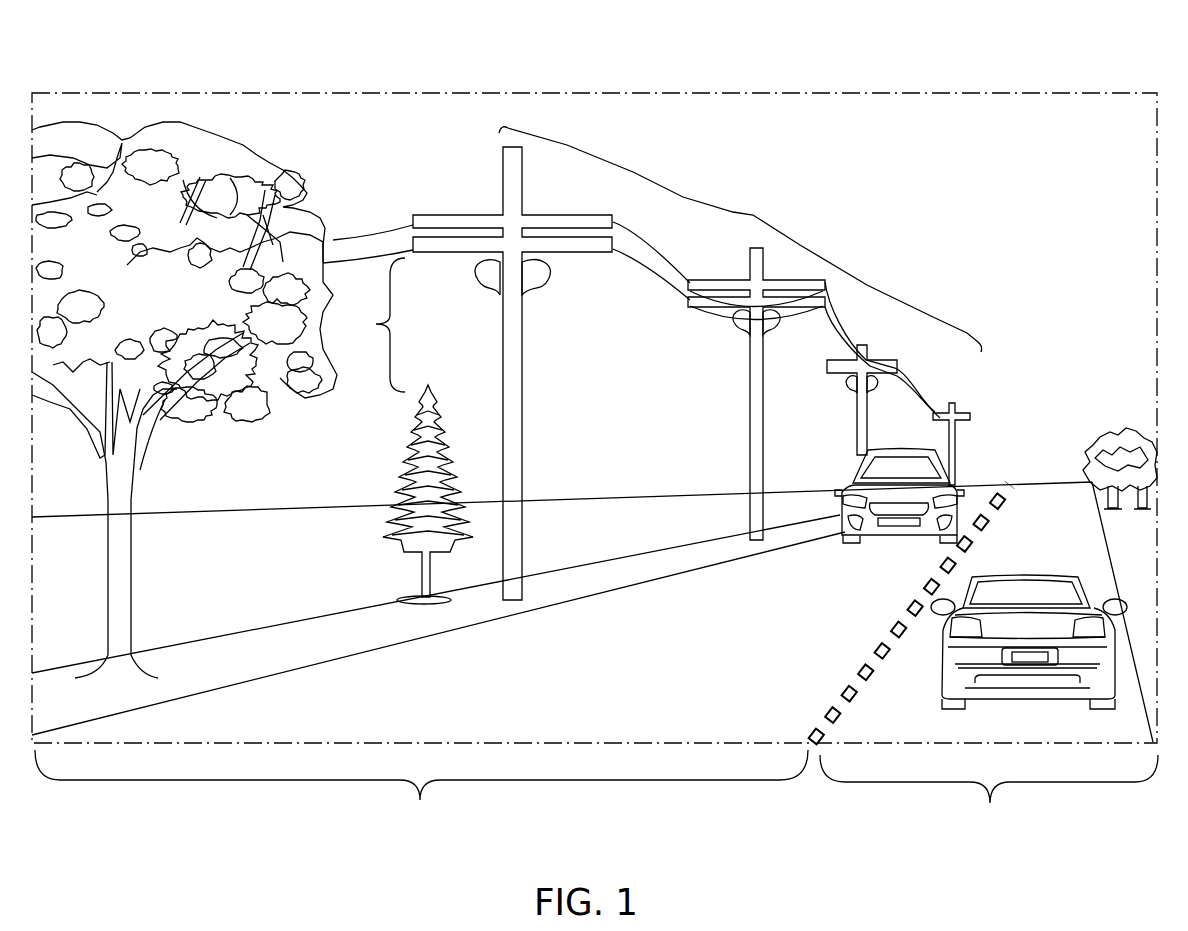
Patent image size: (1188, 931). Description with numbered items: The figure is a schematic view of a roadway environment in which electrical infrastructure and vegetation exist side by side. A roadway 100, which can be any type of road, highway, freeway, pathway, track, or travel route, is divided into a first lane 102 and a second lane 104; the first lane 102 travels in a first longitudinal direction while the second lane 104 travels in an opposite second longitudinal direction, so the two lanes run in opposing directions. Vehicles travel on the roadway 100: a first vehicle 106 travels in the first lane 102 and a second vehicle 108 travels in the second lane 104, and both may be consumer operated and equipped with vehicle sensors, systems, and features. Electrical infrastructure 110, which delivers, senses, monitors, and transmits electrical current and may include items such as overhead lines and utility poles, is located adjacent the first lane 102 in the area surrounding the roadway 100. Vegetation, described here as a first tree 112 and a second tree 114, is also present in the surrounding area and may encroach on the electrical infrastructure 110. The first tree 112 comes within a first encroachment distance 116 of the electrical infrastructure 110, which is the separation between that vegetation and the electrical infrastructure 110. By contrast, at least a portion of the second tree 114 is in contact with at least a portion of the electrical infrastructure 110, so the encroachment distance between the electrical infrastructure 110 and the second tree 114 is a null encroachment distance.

The roadway 100 is at (123, 40).
The first lane 102 is at (421, 793).
The second lane 104 is at (989, 796).
The first vehicle 106 is at (962, 468).
The second vehicle 108 is at (1020, 576).
The electrical infrastructure 110 is at (652, 363).
The first tree 112 is at (392, 498).
The second tree 114 is at (295, 176).
The first encroachment distance 116 is at (372, 325).